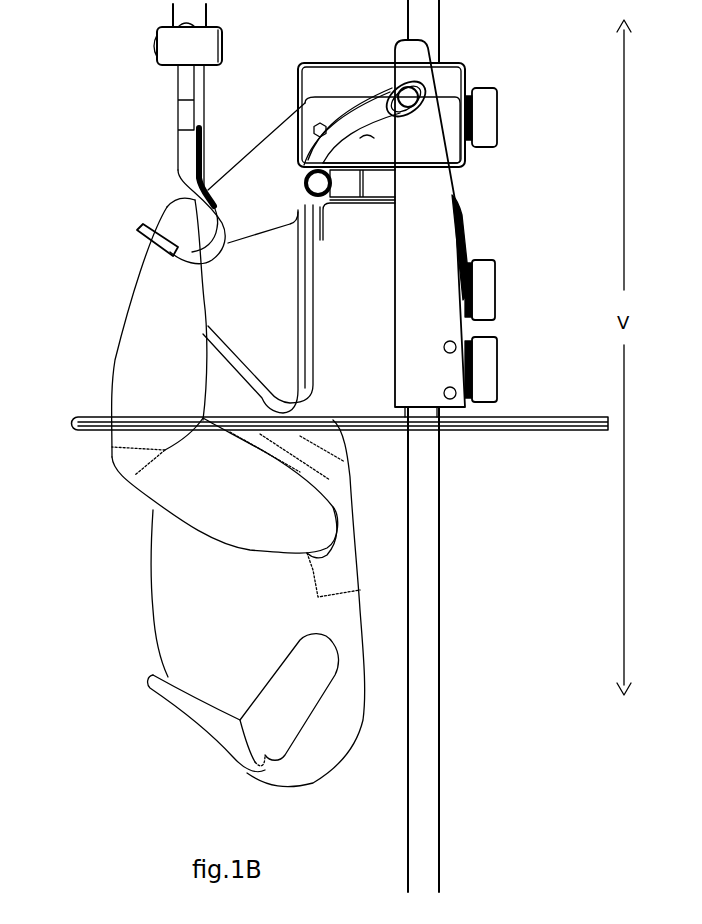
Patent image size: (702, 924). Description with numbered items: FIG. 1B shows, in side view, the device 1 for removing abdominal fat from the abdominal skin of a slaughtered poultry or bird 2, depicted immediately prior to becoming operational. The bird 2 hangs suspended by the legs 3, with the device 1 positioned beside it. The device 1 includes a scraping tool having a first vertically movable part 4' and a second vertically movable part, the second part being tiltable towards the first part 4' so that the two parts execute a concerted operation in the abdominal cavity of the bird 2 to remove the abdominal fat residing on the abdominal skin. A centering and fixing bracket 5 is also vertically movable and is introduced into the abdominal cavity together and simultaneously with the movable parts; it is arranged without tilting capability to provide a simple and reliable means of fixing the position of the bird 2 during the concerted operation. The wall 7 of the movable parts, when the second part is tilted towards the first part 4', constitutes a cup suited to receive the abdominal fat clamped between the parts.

The device 1 is at (512, 183).
The slaughtered poultry or bird 2 is at (140, 620).
The legs 3 is at (109, 358).
The first vertically movable part 4' is at (320, 196).
The centering and fixing bracket 5 is at (320, 327).
The wall 7 is at (243, 218).